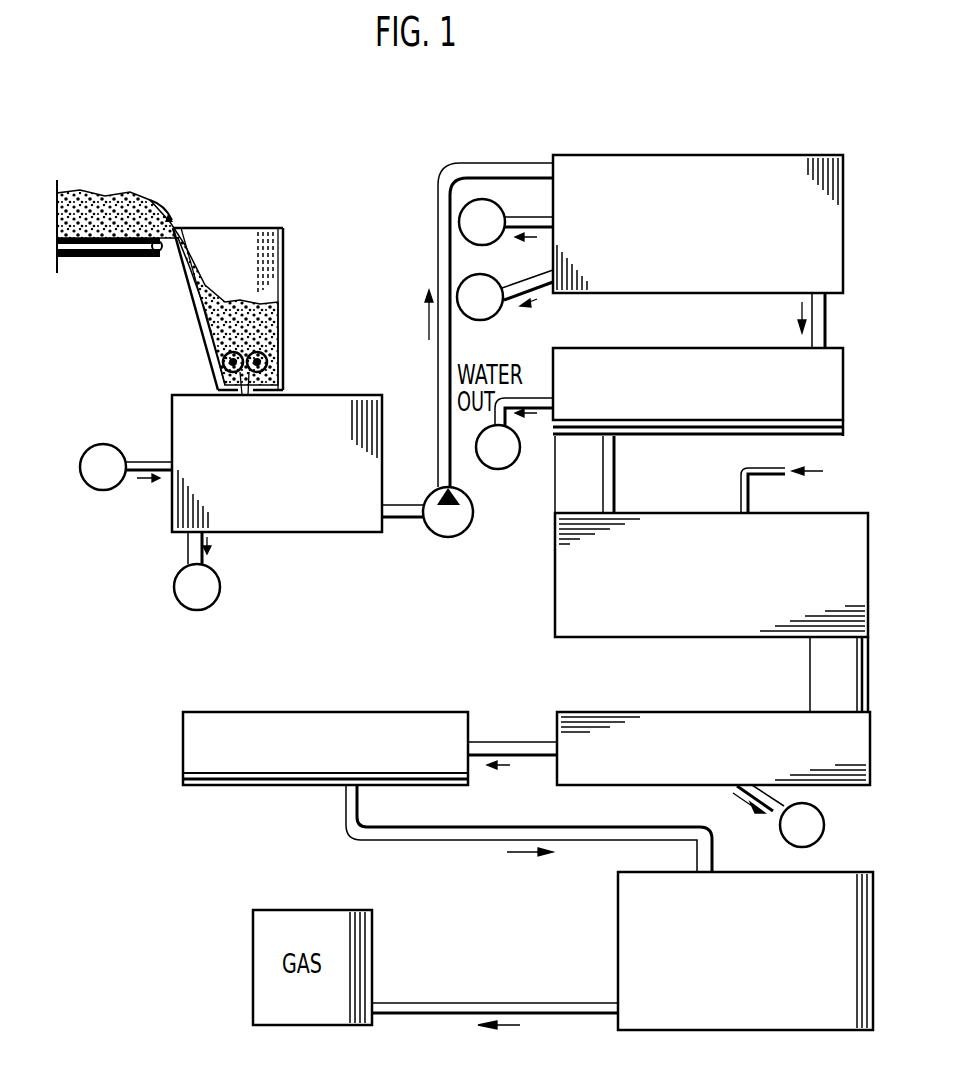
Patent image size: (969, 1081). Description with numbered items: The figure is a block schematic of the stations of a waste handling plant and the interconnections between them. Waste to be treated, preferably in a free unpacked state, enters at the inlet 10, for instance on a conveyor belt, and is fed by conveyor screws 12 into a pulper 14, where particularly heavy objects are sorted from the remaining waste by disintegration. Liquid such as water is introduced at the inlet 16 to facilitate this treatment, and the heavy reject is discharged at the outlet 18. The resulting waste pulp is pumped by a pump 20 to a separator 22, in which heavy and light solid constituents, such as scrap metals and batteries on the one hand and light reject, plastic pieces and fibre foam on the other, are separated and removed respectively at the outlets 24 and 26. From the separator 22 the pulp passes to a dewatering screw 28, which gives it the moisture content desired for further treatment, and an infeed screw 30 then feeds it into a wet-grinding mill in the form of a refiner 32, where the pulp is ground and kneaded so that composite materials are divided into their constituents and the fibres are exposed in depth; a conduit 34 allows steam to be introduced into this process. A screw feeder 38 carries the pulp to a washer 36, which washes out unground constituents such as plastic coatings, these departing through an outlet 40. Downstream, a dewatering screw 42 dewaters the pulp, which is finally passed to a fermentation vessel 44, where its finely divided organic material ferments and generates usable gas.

The waste inlet 10 is at (85, 258).
The conveyor screws 12 is at (218, 370).
The pulper 14 is at (310, 403).
The liquid inlet 16 is at (103, 452).
The heavy reject outlet 18 is at (212, 588).
The pump 20 is at (440, 535).
The separator 22 is at (643, 168).
The heavy constituent outlet 24 is at (482, 315).
The light constituent outlet 26 is at (472, 217).
The dewatering screw 28 is at (692, 357).
The infeed screw 30 is at (563, 488).
The refiner 32 is at (660, 520).
The conduit 34 is at (740, 488).
The washer 36 is at (580, 715).
The screw feeder 38 is at (815, 673).
The outlet 40 is at (822, 826).
The dewatering screw 42 is at (283, 725).
The fermentation vessel 44 is at (625, 925).